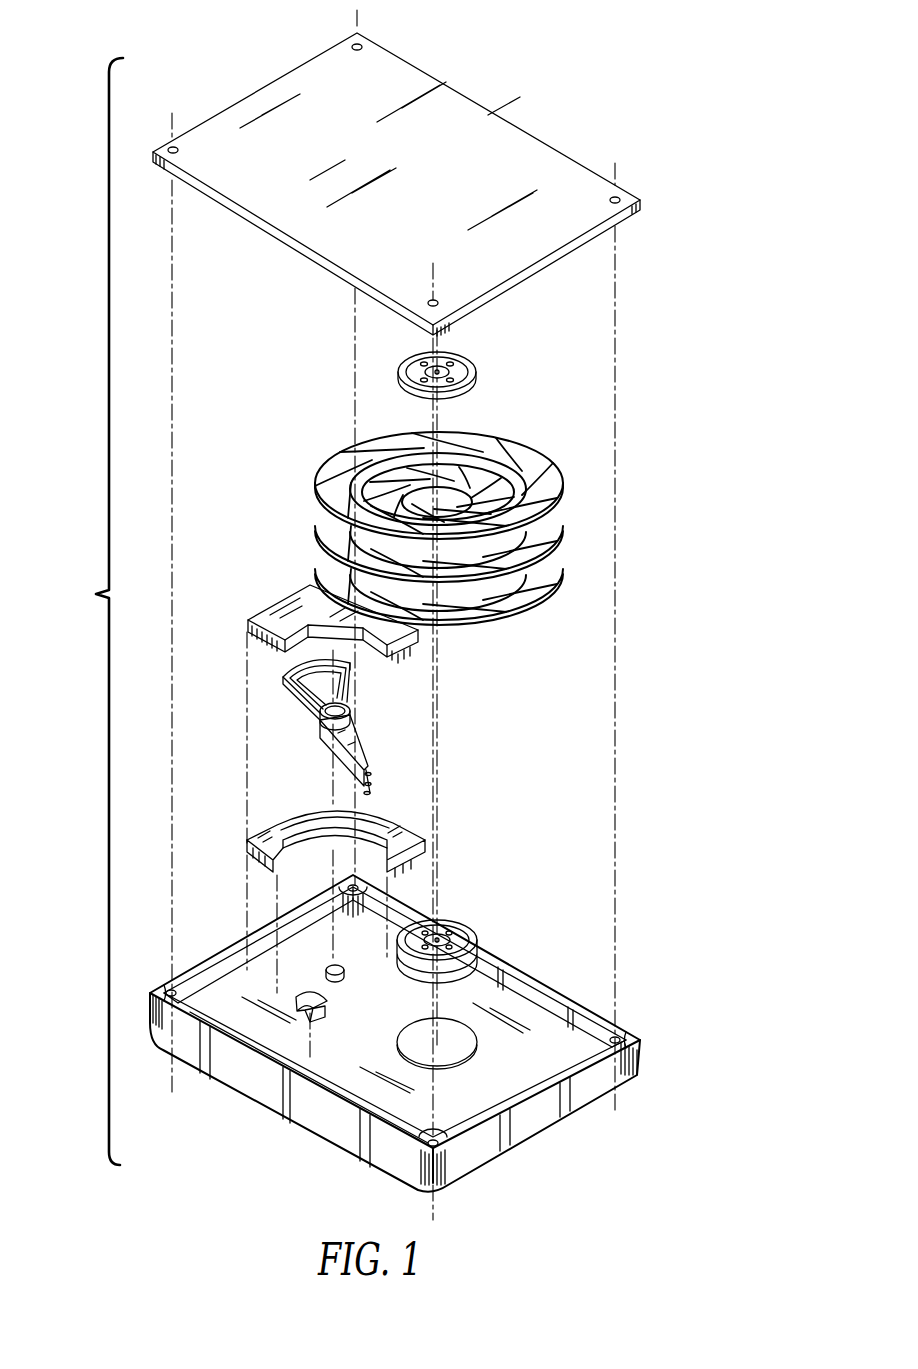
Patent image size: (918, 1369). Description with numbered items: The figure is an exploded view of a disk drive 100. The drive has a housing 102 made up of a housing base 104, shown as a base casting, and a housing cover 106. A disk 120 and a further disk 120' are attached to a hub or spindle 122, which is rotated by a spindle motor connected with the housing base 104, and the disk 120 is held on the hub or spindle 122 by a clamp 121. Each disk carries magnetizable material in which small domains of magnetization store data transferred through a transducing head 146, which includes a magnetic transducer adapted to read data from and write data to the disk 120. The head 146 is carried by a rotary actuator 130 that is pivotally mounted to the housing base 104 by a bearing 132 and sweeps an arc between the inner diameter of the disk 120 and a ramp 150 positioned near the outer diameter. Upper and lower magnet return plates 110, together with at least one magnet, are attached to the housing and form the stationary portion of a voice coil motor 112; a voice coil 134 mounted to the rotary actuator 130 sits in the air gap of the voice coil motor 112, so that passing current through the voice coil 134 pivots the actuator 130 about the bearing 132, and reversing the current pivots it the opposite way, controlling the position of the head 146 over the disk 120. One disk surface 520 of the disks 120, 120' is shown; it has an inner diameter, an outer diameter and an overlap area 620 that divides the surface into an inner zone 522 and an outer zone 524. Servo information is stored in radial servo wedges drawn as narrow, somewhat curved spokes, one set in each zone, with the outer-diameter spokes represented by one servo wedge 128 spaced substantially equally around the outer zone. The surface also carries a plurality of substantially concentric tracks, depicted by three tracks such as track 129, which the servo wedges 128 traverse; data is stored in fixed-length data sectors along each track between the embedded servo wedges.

The disk drive 100 is at (676, 463).
The housing 102 is at (91, 611).
The housing base 104 is at (395, 1033).
The housing cover 106 is at (396, 184).
The magnet return plates 110 is at (336, 731).
The voice coil motor 112 is at (305, 711).
The disk 120 is at (441, 466).
The disk 120' is at (459, 580).
The clamp 121 is at (454, 371).
The hub or spindle 122 is at (451, 942).
The servo wedge 128 is at (456, 539).
The track 129 is at (453, 466).
The rotary actuator 130 is at (379, 727).
The bearing 132 is at (358, 715).
The voice coil 134 is at (315, 697).
The transducing head 146 is at (367, 755).
The ramp 150 is at (348, 1007).
The disk surface 520 is at (458, 483).
The inner zone 522 is at (438, 459).
The outer zone 524 is at (438, 460).
The overlap area 620 is at (376, 476).